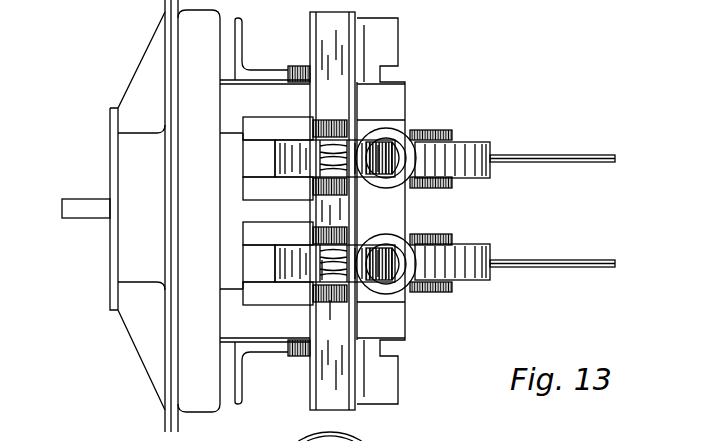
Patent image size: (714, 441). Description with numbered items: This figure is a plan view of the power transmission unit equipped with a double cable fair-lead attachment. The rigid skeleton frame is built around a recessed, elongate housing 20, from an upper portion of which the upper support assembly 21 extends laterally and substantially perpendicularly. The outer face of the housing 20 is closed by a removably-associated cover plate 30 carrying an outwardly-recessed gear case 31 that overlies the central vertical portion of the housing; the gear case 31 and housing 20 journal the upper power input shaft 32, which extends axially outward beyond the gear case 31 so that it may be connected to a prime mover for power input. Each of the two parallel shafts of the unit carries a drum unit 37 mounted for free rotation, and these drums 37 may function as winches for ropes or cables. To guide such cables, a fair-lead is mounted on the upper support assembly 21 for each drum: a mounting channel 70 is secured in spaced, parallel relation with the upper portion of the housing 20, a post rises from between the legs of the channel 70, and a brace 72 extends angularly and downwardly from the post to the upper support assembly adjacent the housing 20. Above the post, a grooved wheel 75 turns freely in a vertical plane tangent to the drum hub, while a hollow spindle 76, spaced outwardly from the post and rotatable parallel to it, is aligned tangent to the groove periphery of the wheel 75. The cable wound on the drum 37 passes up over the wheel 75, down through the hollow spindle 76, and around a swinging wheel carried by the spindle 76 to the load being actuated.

The housing 20 is at (199, 211).
The upper support assembly 21 is at (312, 211).
The cover plate 30 is at (167, 58).
The gear case 31 is at (137, 211).
The upper power input shaft 32 is at (84, 211).
The drum unit 37 is at (272, 211).
The mounting channel 70 is at (332, 211).
The brace 72 is at (282, 132).
The grooved wheel 75 is at (337, 140).
The hollow spindle 76 is at (396, 138).